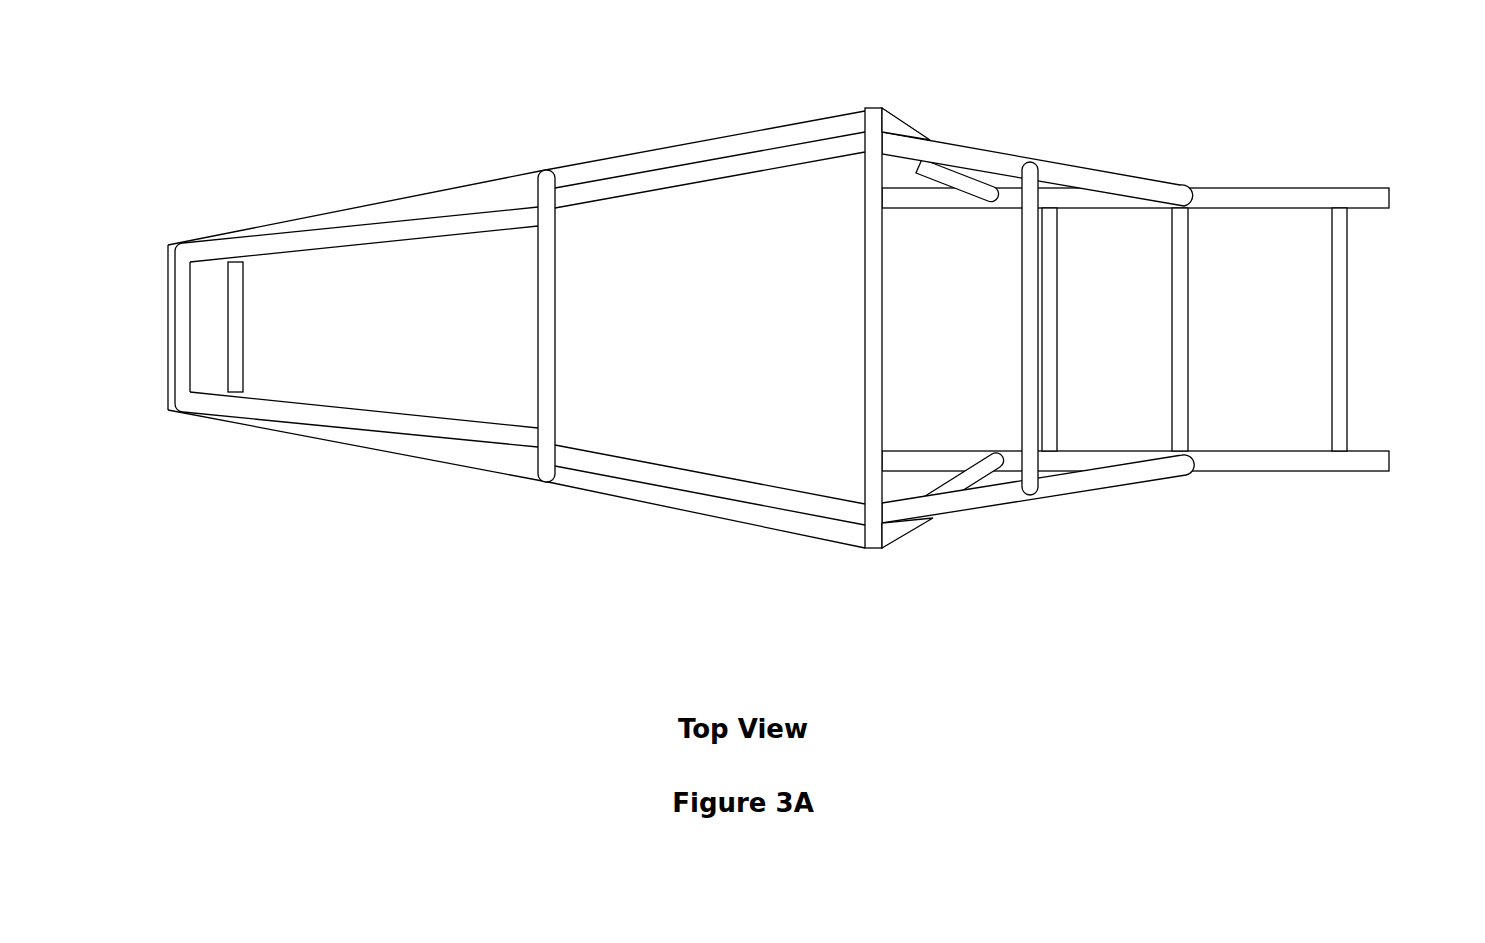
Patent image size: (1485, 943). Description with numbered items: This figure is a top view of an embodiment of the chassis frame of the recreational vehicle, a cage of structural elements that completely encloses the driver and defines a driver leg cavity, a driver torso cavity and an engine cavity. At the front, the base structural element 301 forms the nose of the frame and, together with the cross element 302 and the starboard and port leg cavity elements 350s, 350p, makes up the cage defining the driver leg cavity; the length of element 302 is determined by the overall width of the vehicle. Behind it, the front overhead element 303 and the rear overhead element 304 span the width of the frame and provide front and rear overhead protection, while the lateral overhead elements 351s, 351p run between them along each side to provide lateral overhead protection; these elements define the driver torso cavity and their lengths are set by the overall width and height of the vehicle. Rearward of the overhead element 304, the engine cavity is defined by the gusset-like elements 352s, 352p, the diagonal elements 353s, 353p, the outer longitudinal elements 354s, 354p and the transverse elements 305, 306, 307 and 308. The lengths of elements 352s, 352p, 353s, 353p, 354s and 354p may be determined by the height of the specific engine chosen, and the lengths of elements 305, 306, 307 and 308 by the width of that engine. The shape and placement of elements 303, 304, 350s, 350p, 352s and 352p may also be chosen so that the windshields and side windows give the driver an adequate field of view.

The base structural element 301 is at (180, 280).
The driver leg cavity cage element 302 is at (237, 331).
The front overhead element 303 is at (545, 308).
The rear overhead element 304 is at (873, 375).
The engine cavity cage element 305 is at (1028, 312).
The engine cavity cage element 306 is at (1053, 351).
The engine cavity cage element 307 is at (1182, 317).
The engine cavity cage element 308 is at (1340, 265).
The driver leg cavity cage element 350s is at (225, 247).
The driver leg cavity cage element 350p is at (238, 405).
The lateral overhead element 351s is at (692, 175).
The lateral overhead element 351p is at (680, 477).
The engine cavity cage element 352s is at (897, 128).
The engine cavity cage element 352p is at (893, 532).
The engine cavity cage element 353s is at (997, 165).
The engine cavity cage element 353p is at (1063, 480).
The engine cavity cage element 354s is at (1327, 197).
The engine cavity cage element 354p is at (1285, 462).